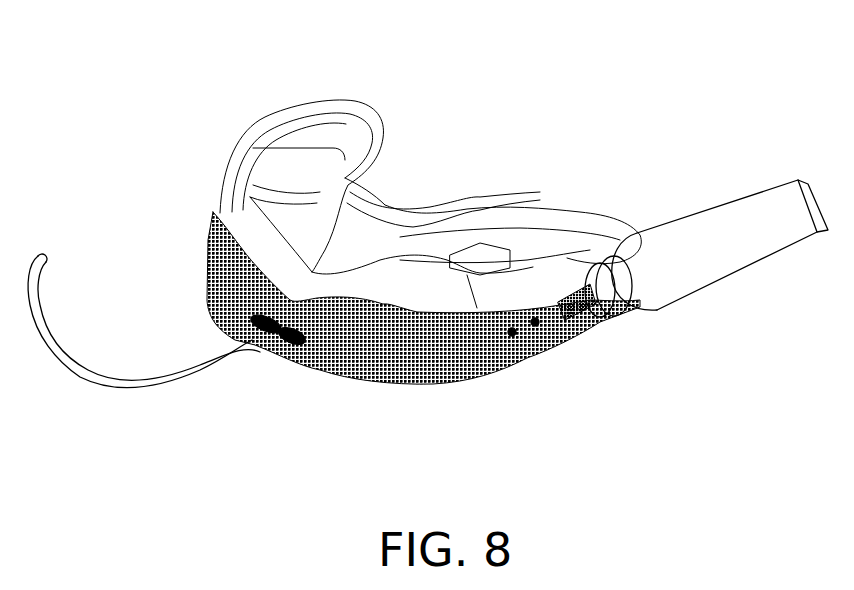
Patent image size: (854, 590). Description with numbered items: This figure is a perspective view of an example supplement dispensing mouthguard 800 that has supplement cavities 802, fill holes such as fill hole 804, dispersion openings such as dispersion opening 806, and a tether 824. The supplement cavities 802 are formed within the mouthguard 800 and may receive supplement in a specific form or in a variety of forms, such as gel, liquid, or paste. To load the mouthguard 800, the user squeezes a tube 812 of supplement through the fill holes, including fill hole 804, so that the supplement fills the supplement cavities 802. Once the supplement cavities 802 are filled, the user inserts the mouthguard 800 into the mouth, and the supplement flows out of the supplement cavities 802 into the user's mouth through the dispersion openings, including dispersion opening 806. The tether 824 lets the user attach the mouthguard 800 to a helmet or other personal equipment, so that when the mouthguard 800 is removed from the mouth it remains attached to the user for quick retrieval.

The supplement dispensing mouthguard 800 is at (212, 106).
The supplement cavities 802 is at (330, 150).
The fill hole 804 is at (535, 320).
The dispersion opening 806 is at (350, 180).
The tube 812 is at (733, 257).
The tether 824 is at (93, 372).